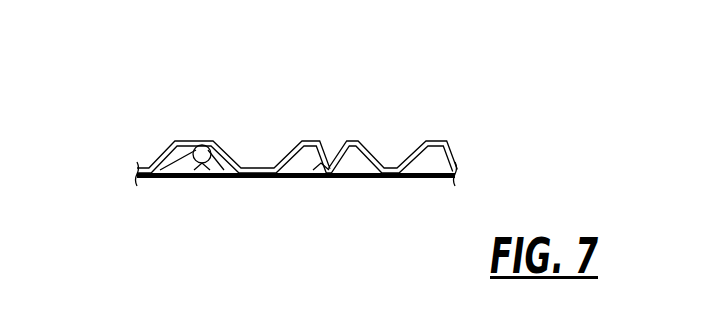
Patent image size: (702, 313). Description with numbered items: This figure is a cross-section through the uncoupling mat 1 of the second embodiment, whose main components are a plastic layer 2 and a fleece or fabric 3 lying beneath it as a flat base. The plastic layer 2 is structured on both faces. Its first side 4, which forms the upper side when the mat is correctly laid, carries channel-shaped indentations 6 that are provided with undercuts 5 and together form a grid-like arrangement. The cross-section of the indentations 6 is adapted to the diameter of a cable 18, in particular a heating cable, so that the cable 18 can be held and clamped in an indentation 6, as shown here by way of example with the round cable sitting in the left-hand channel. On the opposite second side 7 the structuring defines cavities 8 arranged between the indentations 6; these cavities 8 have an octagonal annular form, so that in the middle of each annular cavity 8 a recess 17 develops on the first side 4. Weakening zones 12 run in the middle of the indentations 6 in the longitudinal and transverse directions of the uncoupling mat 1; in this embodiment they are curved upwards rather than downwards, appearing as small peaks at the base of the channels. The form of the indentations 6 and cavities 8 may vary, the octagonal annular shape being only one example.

The uncoupling mat 1 is at (436, 80).
The plastic layer 2 is at (341, 124).
The fleece or fabric 3 is at (360, 180).
The first side 4 is at (214, 127).
The undercut 5 is at (317, 178).
The indentation 6 is at (172, 142).
The second side 7 is at (233, 178).
The cavity 8 is at (278, 148).
The weakening zone 12 is at (202, 177).
The recess 17 is at (253, 147).
The cable 18 is at (202, 141).